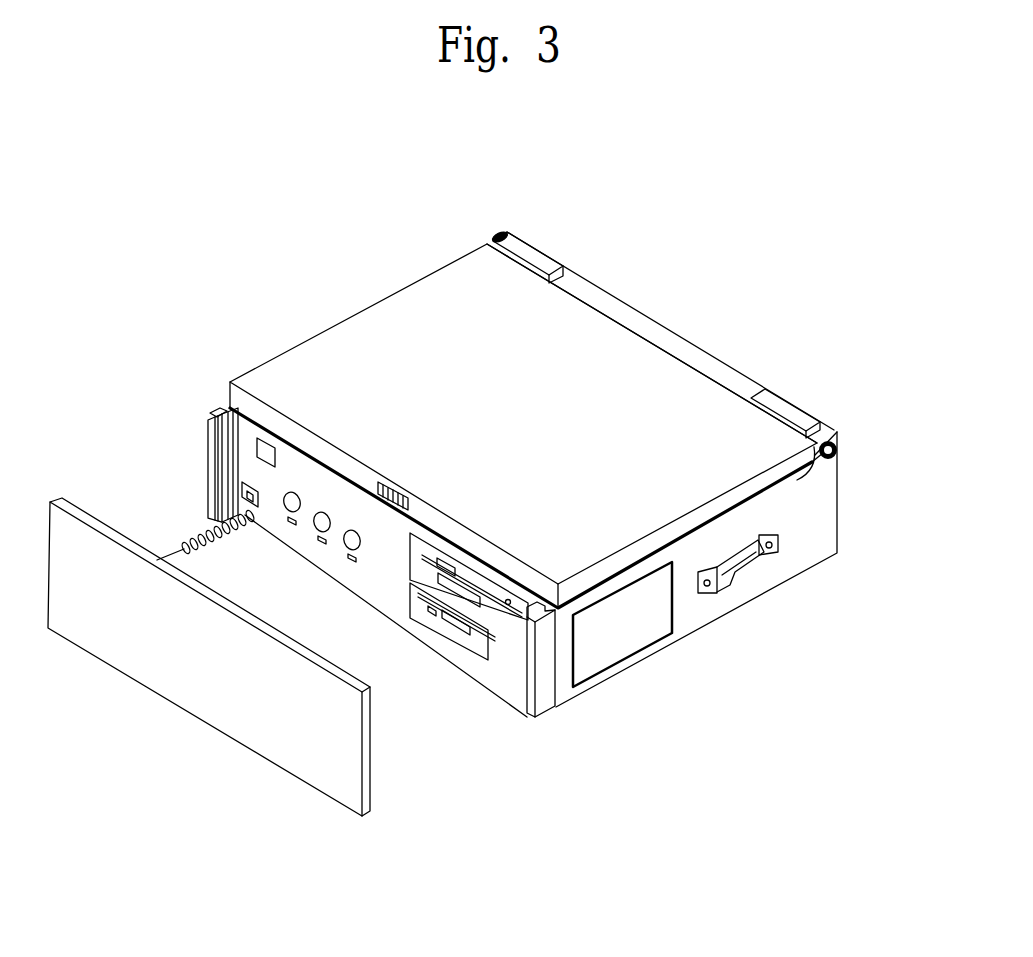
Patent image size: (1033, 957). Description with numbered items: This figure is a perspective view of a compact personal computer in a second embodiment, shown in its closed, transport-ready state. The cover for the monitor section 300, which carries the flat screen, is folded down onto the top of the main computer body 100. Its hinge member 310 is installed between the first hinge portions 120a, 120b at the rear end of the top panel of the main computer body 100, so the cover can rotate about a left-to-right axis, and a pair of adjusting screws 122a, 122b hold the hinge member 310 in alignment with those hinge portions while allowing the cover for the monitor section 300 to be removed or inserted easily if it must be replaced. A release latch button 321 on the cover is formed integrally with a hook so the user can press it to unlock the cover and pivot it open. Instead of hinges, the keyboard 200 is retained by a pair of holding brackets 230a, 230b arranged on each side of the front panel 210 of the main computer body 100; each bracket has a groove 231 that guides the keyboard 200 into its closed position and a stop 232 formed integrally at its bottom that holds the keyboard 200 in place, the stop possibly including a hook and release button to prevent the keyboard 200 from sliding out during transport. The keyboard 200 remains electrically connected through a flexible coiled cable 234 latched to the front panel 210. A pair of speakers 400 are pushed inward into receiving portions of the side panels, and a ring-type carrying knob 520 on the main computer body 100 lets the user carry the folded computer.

The main computer body 100 is at (748, 617).
The first hinge portion 120a is at (790, 415).
The first hinge portion 120b is at (545, 268).
The adjusting screw 122a is at (834, 443).
The adjusting screw 122b is at (499, 232).
The keyboard 200 is at (372, 737).
The front panel 210 is at (260, 523).
The holding bracket 230a is at (548, 680).
The holding bracket 230b is at (213, 465).
The groove 231 is at (230, 413).
The stop 232 is at (240, 511).
The flexible coiled cable 234 is at (239, 543).
The cover for the monitor section 300 is at (313, 352).
The hinge member 310 is at (648, 332).
The release latch button 321 is at (378, 488).
The speakers 400 is at (627, 632).
The ring-type carrying knob 520 is at (755, 570).